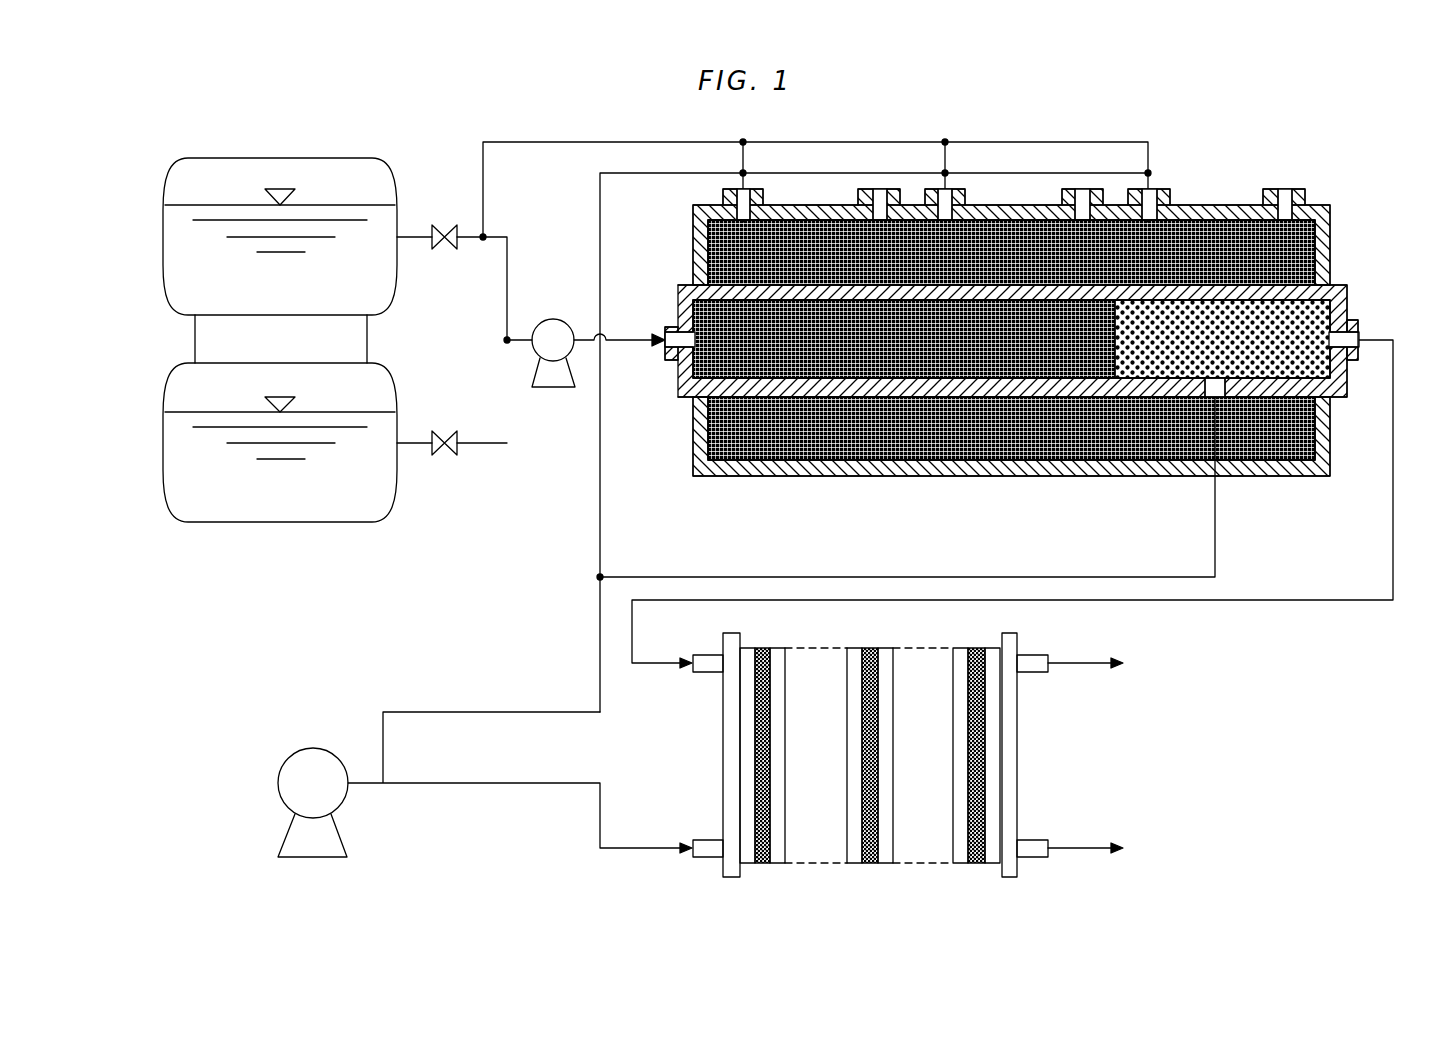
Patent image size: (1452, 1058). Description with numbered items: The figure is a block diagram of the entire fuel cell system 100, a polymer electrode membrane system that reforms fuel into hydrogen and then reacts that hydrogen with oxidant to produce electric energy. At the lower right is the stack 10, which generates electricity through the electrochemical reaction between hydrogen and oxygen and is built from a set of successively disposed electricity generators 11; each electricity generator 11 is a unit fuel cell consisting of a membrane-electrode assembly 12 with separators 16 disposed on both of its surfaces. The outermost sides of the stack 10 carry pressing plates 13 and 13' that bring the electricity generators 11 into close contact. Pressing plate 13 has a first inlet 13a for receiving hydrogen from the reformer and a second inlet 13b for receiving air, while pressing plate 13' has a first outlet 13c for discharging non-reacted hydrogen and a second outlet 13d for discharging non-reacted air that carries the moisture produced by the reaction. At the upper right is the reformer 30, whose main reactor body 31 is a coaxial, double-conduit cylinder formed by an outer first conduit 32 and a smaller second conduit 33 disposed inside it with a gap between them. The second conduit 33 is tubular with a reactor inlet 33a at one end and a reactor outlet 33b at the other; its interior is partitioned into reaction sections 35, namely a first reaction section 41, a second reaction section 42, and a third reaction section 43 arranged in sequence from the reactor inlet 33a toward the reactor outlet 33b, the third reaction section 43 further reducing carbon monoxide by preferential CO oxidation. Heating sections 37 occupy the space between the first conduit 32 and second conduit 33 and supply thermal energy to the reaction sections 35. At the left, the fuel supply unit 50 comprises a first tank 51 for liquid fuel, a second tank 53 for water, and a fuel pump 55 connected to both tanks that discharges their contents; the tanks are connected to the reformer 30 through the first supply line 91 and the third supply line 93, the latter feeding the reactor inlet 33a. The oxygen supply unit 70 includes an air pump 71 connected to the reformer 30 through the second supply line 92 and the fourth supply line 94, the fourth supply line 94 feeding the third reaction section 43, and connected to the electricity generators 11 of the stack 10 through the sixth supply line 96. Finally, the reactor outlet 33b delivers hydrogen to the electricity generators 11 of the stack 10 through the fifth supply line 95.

The fuel cell system 100 is at (500, 125).
The stack 10 is at (1080, 715).
The electricity generator 11 is at (870, 802).
The membrane-electrode assembly 12 is at (870, 865).
The separator 16 is at (855, 865).
The pressing plate 13 is at (731, 780).
The pressing plate 13' is at (1012, 780).
The first inlet 13a is at (708, 668).
The second inlet 13b is at (708, 852).
The first outlet 13c is at (1033, 845).
The second outlet 13d is at (1033, 660).
The reformer 30 is at (1328, 168).
The main reactor body 31 is at (1023, 370).
The first conduit 32 is at (1318, 205).
The second conduit 33 is at (1015, 422).
The reactor inlet 33a is at (665, 325).
The reactor outlet 33b is at (1376, 335).
The reaction section 35 is at (1066, 431).
The first reaction section 41 is at (822, 390).
The second reaction section 42 is at (1022, 390).
The third reaction section 43 is at (1162, 447).
The heating section 37 is at (1272, 492).
The fuel supply unit 50 is at (178, 530).
The first tank 51 is at (278, 158).
The second tank 53 is at (282, 522).
The fuel pump 55 is at (553, 388).
The oxygen supply unit 70 is at (262, 812).
The air pump 71 is at (278, 783).
The first supply line 91 is at (813, 142).
The second supply line 92 is at (636, 173).
The third supply line 93 is at (627, 343).
The fourth supply line 94 is at (1216, 540).
The fifth supply line 95 is at (1240, 600).
The sixth supply line 96 is at (450, 785).